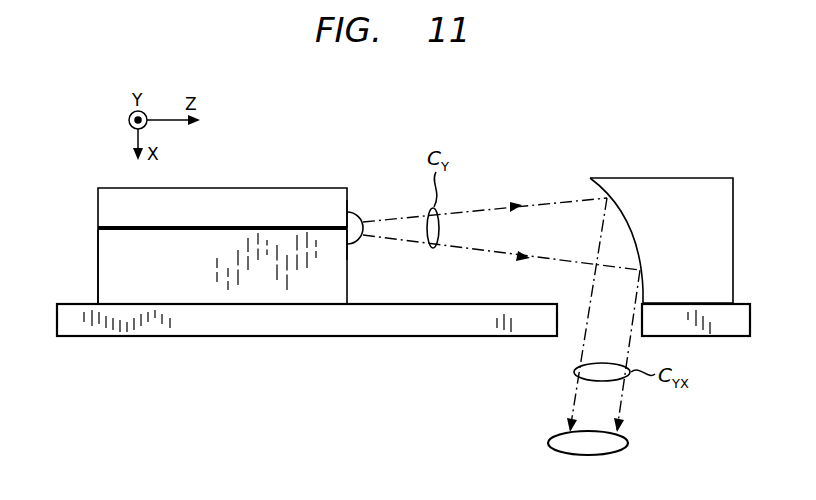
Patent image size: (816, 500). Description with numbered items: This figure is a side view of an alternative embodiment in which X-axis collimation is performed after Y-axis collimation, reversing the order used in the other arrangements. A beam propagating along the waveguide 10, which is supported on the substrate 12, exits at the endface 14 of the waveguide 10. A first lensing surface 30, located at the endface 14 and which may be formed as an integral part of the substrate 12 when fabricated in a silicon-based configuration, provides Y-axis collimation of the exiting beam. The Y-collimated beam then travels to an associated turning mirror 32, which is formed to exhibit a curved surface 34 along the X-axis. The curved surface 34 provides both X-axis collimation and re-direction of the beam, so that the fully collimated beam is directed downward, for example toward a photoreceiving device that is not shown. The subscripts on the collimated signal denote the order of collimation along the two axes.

The waveguide 10 is at (118, 226).
The substrate 12 is at (112, 265).
The endface 14 is at (348, 201).
The first lensing surface 30 is at (366, 211).
The turning mirror 32 is at (660, 186).
The curved surface 34 is at (630, 236).